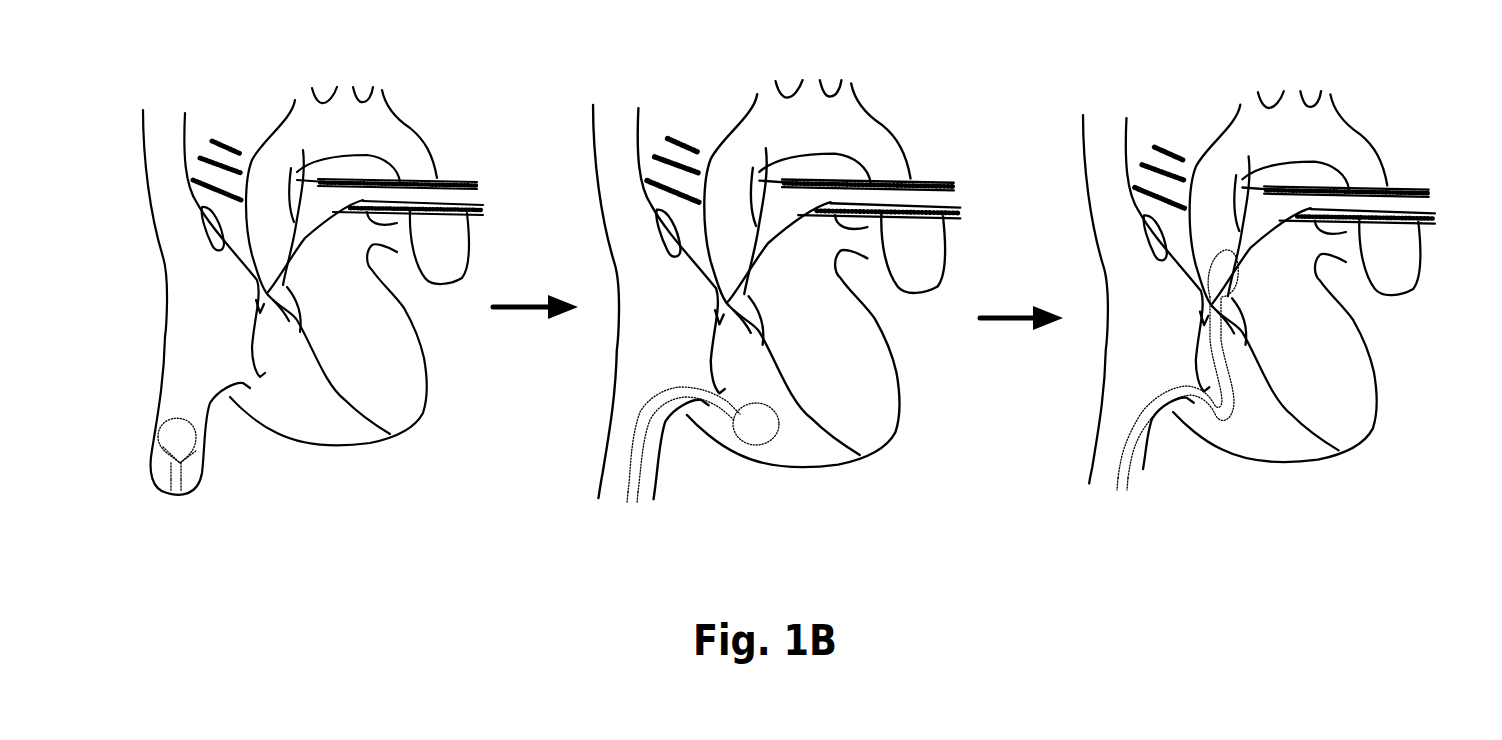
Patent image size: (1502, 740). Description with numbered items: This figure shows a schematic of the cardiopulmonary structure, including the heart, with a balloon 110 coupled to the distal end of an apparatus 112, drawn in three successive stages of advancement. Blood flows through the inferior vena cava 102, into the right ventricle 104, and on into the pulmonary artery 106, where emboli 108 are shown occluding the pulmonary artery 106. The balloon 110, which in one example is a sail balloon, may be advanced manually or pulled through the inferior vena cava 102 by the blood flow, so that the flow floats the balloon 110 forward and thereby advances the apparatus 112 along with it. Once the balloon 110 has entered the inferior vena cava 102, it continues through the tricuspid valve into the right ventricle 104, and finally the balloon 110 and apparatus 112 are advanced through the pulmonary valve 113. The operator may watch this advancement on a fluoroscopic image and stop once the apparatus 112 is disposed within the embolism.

The inferior vena cava 102 is at (200, 479).
The right ventricle 104 is at (314, 413).
The pulmonary artery 106 is at (328, 196).
The emboli 108 is at (444, 179).
The balloon 110 is at (170, 425).
The apparatus 112 is at (177, 487).
The pulmonary valve 113 is at (259, 288).